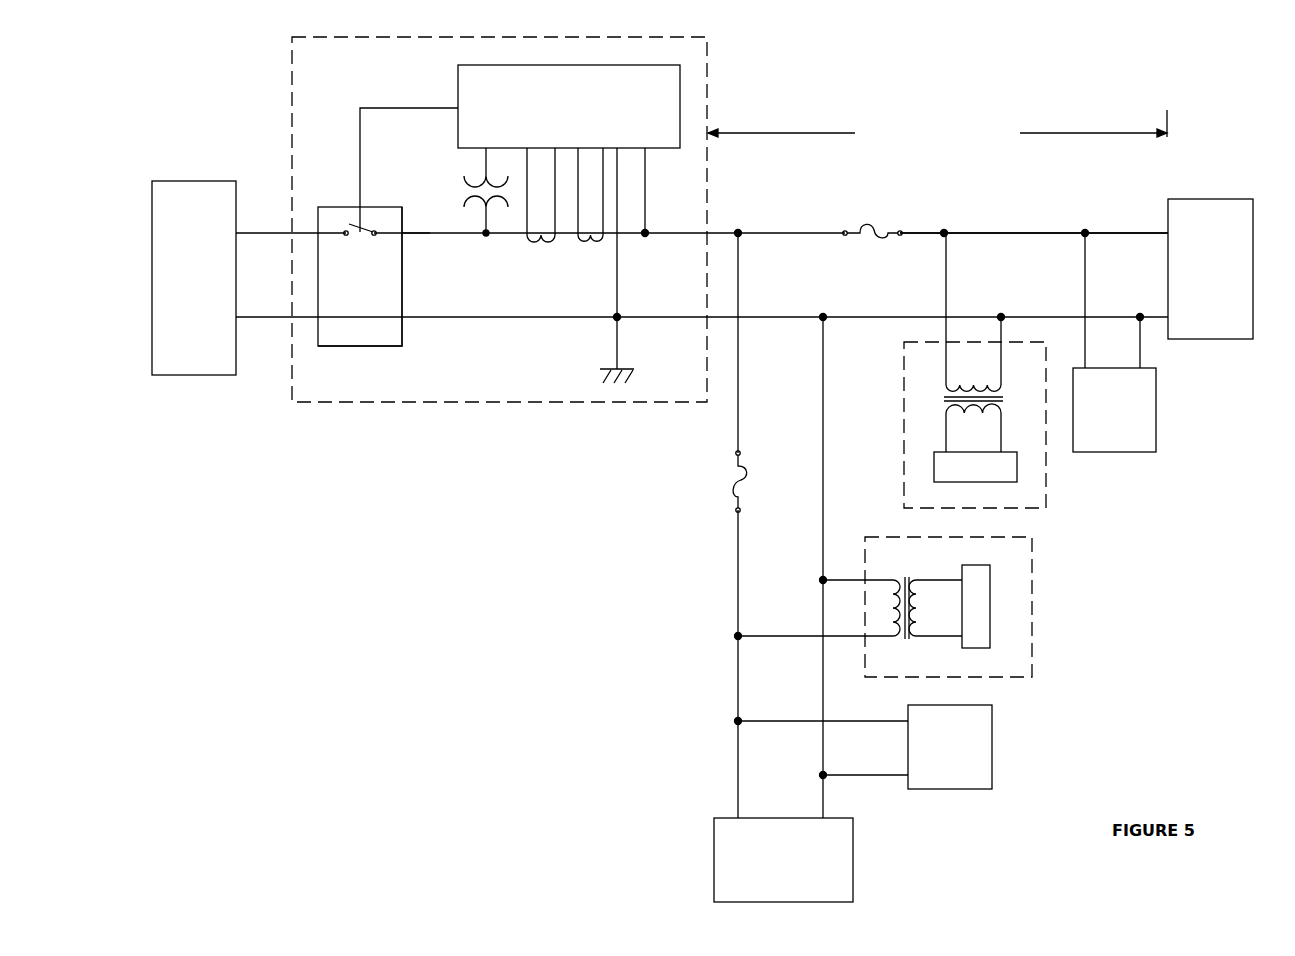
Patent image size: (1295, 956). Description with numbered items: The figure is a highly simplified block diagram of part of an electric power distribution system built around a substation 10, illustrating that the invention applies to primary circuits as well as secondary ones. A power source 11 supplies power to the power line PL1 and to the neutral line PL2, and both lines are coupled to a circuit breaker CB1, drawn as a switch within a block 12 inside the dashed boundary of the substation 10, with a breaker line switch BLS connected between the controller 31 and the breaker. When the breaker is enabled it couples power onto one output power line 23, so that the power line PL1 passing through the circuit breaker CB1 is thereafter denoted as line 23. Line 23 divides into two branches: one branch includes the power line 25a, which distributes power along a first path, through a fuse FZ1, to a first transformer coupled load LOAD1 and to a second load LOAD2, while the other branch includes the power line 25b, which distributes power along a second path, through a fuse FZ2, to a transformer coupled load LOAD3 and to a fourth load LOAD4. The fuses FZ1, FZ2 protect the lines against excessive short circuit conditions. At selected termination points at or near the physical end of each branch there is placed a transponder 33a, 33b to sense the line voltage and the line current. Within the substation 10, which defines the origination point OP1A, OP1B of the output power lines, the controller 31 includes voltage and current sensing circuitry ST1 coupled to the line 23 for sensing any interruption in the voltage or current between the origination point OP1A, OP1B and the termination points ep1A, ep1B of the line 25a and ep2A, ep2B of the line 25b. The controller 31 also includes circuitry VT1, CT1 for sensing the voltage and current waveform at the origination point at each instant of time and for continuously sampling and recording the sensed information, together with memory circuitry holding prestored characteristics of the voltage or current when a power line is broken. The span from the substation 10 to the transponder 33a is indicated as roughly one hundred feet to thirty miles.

The substation 10 is at (693, 120).
The power source 11 is at (180, 347).
The circuit breaker 12 is at (388, 331).
The output power line 23 is at (430, 235).
The power line 25a is at (986, 228).
The power line 25b is at (737, 589).
The controller 31 is at (597, 93).
The transponder 33a is at (1195, 212).
The transponder 33b is at (810, 887).
The breaker line switch BLS is at (386, 108).
The circuit breaker CB1 is at (347, 347).
The voltage sensing circuitry VT1 is at (464, 192).
The current sensing circuitry CT1 is at (539, 210).
The voltage and current sensing circuitry ST1 is at (589, 210).
The origination point OP1A is at (645, 233).
The origination point OP1B is at (617, 317).
The power line PL1 is at (702, 223).
The neutral line PL2 is at (702, 307).
The fuse FZ1 is at (872, 218).
The fuse FZ2 is at (717, 481).
The termination point ep1A is at (1087, 230).
The termination point ep1B is at (1141, 314).
The termination point ep2A is at (738, 722).
The termination point ep2B is at (826, 777).
The transformer coupled load LOAD1 is at (1031, 495).
The load LOAD2 is at (1114, 410).
The transformer coupled load LOAD3 is at (1004, 661).
The load LOAD4 is at (950, 747).